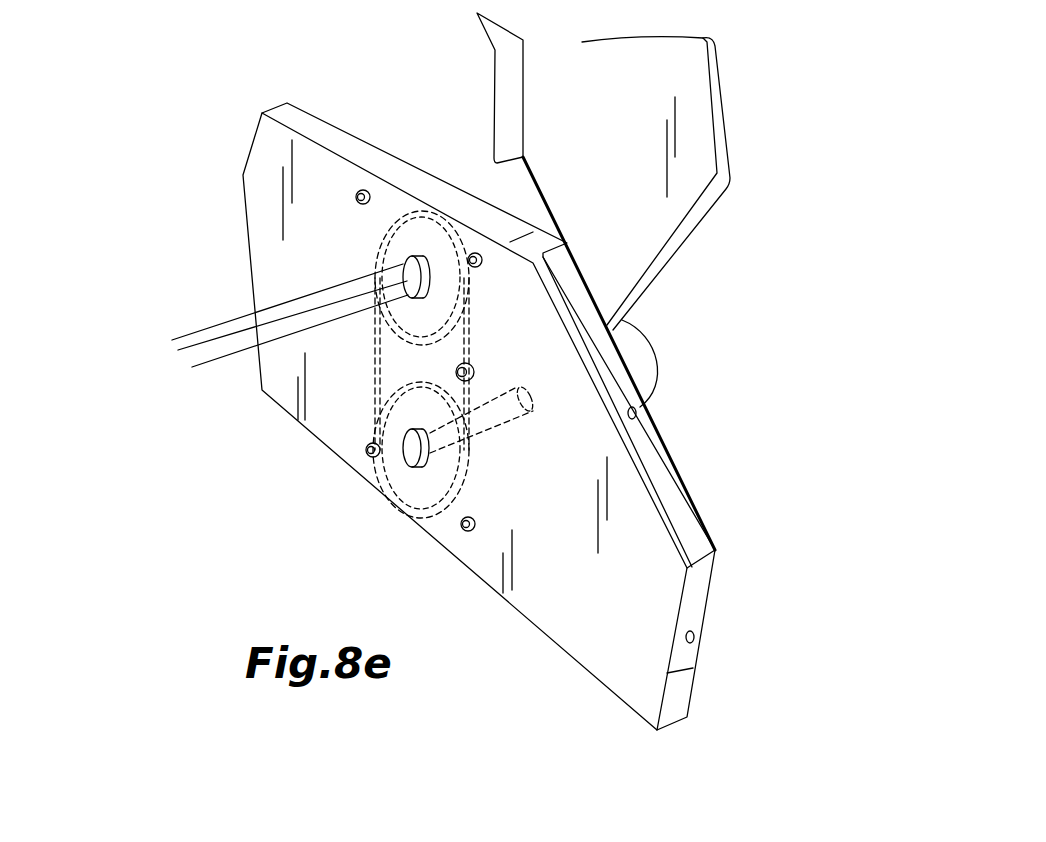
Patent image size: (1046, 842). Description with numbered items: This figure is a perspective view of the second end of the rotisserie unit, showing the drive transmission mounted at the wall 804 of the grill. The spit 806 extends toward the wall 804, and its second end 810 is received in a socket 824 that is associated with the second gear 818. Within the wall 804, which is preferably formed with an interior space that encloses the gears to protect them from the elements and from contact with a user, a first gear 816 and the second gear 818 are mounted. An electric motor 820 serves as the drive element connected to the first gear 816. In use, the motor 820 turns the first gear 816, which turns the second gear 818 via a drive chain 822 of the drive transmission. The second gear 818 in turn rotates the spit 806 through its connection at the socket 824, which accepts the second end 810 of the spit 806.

The wall 804 is at (309, 127).
The spit 806 is at (203, 372).
The second end 810 is at (348, 236).
The first gear 816 is at (417, 487).
The second gear 818 is at (402, 232).
The electric motor 820 is at (675, 320).
The drive chain 822 is at (326, 428).
The socket 824 is at (378, 263).